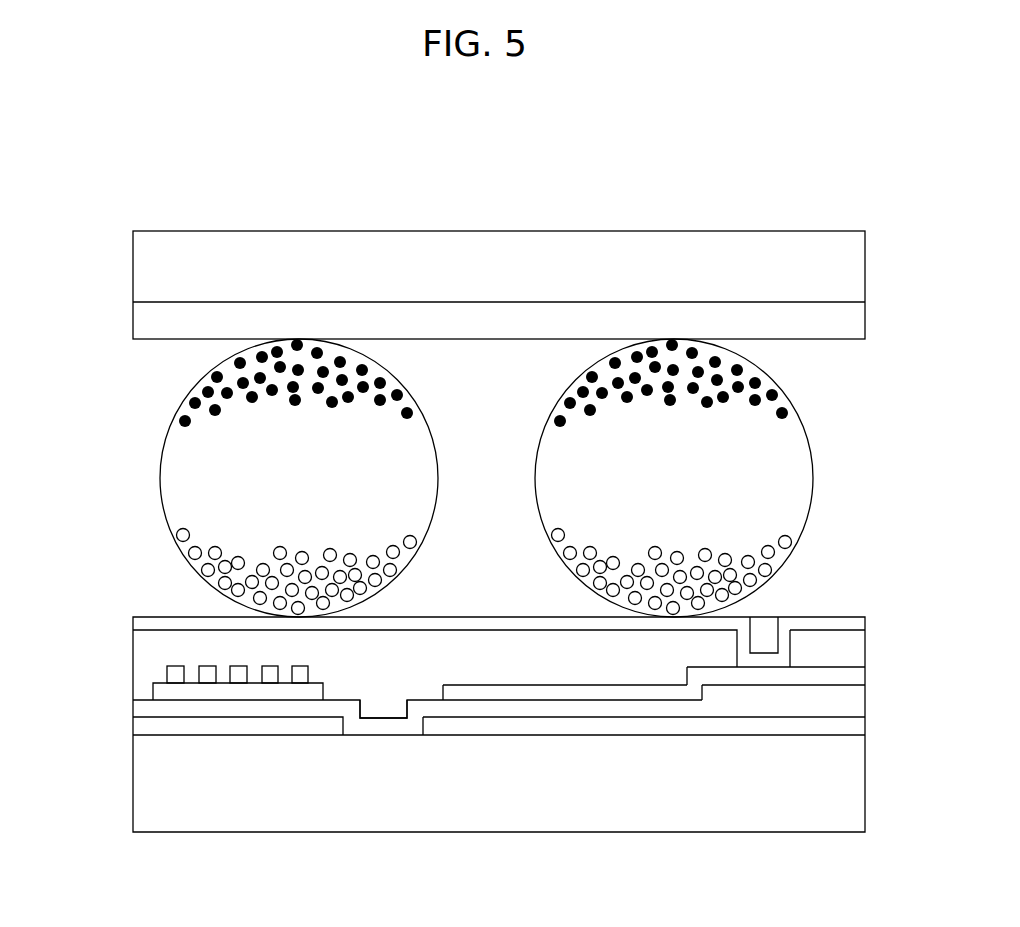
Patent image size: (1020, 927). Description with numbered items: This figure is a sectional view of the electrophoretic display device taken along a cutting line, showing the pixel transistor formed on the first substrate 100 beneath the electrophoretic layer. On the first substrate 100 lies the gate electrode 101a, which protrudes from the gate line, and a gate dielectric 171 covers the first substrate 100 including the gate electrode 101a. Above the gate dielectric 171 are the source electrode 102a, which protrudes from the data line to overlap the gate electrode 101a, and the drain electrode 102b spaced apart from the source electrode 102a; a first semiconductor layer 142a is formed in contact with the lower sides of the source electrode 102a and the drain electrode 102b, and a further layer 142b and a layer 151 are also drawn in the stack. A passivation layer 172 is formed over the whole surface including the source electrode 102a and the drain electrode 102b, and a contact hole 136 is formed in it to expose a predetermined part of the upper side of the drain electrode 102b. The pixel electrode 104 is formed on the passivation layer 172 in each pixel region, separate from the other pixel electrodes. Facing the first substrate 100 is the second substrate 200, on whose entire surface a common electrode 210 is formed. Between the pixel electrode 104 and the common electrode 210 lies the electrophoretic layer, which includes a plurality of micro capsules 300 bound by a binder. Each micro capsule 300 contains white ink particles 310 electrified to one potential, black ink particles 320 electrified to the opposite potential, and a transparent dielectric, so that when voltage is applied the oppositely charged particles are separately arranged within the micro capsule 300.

The first substrate 100 is at (142, 791).
The gate electrode 101a is at (142, 727).
The source electrode 102a is at (297, 677).
The drain electrode 102b is at (275, 668).
The pixel electrode 104 is at (532, 623).
The contact hole 136 is at (765, 626).
The first semiconductor layer 142a is at (315, 693).
The gate electrode 142b is at (810, 692).
The semiconductor layer 151 is at (593, 727).
The gate dielectric 171 is at (377, 723).
The passivation layer 172 is at (142, 664).
The second substrate 200 is at (140, 267).
The common electrode 210 is at (140, 323).
The micro capsule 300 is at (160, 475).
The white ink particles 310 is at (715, 613).
The black ink particles 320 is at (777, 392).